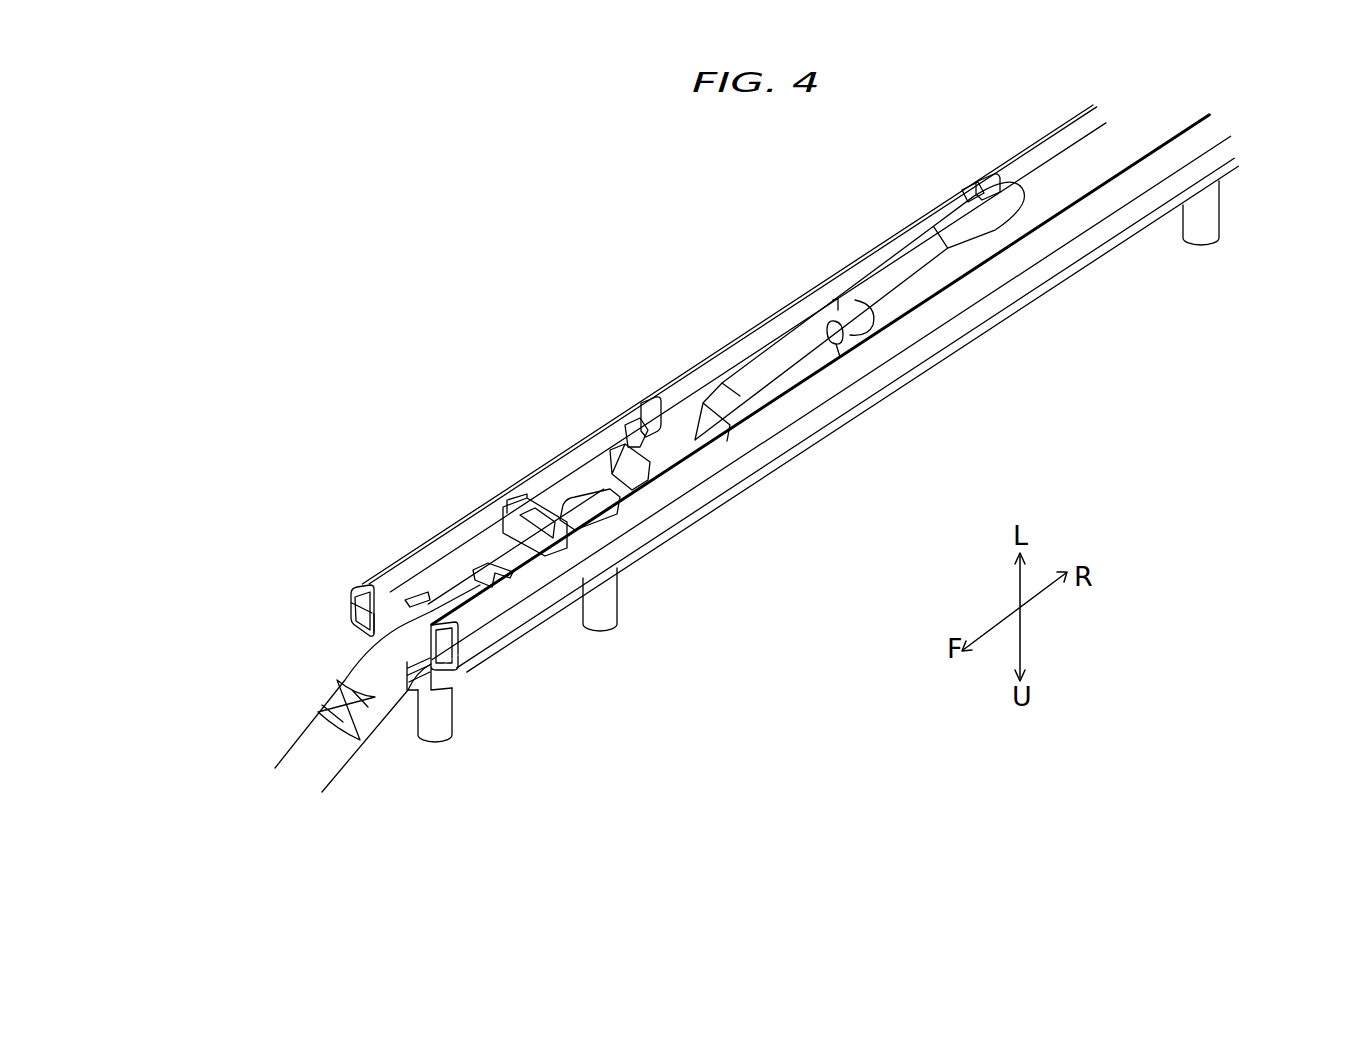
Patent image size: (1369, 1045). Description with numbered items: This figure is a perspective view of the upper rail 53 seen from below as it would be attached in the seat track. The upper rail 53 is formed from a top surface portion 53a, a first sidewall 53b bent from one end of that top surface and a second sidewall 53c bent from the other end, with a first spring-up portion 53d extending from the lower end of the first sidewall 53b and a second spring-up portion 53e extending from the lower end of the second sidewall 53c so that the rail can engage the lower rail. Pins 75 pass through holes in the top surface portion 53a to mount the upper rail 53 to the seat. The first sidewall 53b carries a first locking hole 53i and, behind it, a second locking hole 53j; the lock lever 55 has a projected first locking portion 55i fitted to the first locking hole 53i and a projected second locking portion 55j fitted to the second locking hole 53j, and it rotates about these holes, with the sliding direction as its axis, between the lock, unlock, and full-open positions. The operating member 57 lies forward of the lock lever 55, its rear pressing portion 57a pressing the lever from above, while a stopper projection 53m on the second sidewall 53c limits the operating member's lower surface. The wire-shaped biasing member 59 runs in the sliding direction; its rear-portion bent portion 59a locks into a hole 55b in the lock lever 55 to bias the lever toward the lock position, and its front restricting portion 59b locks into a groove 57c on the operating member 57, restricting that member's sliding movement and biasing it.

The upper rail 53 is at (1046, 339).
The top surface portion 53a is at (408, 700).
The first sidewall 53b is at (365, 630).
The second sidewall 53c is at (445, 686).
The first spring-up portion 53d is at (352, 598).
The second spring-up portion 53e is at (500, 625).
The first locking hole 53i is at (655, 405).
The second locking hole 53j is at (993, 178).
The stopper projection 53m is at (612, 512).
The lock lever 55 is at (773, 372).
The hole 55b is at (840, 348).
The first locking portion 55i is at (640, 437).
The second locking portion 55j is at (964, 188).
The operating member 57 is at (330, 693).
The pressing portion 57a is at (296, 746).
The groove 57c is at (440, 603).
The biasing member 59 is at (612, 478).
The rear-portion bent portion 59a is at (862, 338).
The restricting portion 59b is at (418, 598).
The pins 75 is at (452, 727).